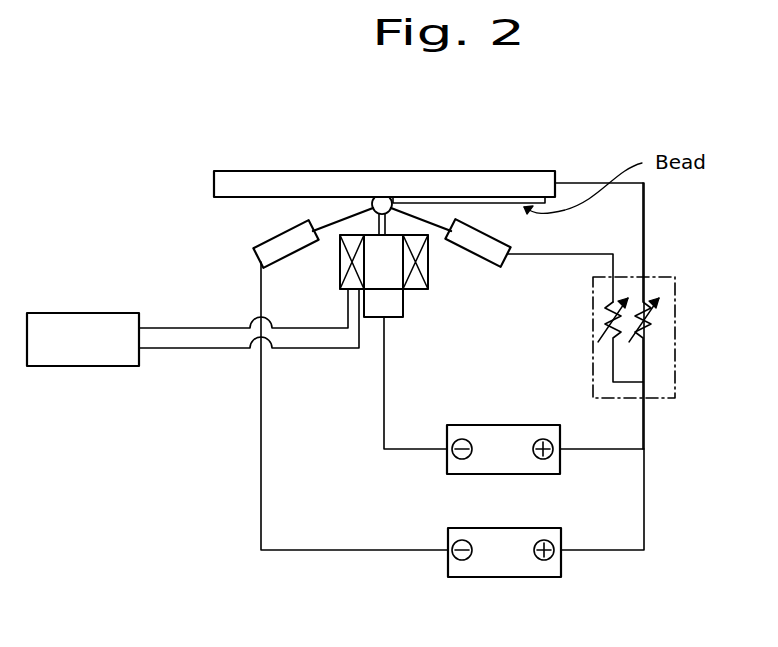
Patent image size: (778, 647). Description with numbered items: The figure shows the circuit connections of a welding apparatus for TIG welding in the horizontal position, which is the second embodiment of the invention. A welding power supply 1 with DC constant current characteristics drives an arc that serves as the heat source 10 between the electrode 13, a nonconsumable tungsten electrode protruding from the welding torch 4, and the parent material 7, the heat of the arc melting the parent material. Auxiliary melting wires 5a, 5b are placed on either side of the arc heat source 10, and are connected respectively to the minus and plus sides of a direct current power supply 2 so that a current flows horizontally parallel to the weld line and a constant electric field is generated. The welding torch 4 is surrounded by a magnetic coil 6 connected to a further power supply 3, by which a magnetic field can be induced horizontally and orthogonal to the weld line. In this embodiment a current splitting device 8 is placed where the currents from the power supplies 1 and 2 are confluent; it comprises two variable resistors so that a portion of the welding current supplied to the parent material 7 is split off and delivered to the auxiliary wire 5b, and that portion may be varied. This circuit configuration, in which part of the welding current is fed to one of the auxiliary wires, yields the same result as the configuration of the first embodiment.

The welding power supply 1 is at (468, 430).
The power supply 2 is at (487, 570).
The power supply 3 is at (68, 364).
The welding torch 4 is at (395, 302).
The auxiliary wire 5a is at (338, 219).
The auxiliary wire 5b is at (428, 219).
The magnetic coil 6 is at (340, 268).
The parent material 7 is at (214, 183).
The current splitting device 8 is at (677, 345).
The heat source 10 is at (383, 197).
The electrode 13 is at (513, 245).